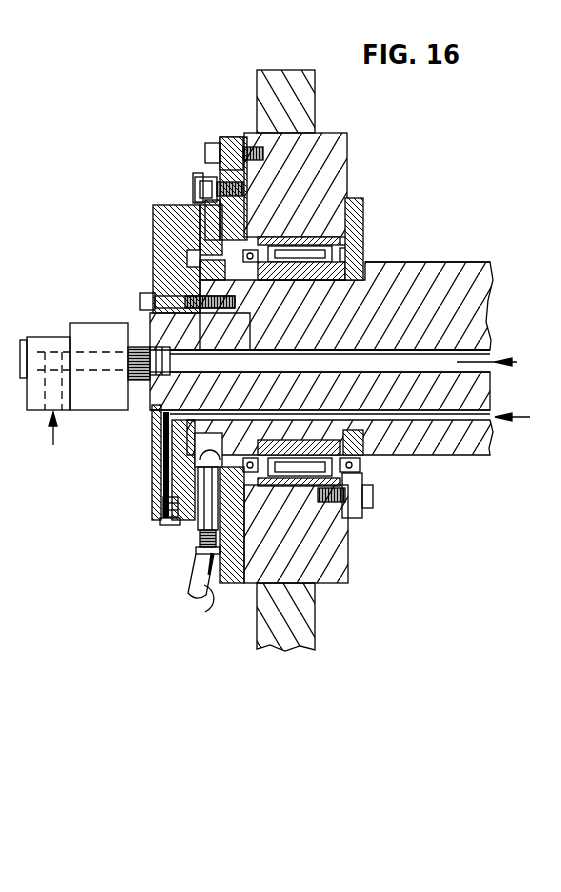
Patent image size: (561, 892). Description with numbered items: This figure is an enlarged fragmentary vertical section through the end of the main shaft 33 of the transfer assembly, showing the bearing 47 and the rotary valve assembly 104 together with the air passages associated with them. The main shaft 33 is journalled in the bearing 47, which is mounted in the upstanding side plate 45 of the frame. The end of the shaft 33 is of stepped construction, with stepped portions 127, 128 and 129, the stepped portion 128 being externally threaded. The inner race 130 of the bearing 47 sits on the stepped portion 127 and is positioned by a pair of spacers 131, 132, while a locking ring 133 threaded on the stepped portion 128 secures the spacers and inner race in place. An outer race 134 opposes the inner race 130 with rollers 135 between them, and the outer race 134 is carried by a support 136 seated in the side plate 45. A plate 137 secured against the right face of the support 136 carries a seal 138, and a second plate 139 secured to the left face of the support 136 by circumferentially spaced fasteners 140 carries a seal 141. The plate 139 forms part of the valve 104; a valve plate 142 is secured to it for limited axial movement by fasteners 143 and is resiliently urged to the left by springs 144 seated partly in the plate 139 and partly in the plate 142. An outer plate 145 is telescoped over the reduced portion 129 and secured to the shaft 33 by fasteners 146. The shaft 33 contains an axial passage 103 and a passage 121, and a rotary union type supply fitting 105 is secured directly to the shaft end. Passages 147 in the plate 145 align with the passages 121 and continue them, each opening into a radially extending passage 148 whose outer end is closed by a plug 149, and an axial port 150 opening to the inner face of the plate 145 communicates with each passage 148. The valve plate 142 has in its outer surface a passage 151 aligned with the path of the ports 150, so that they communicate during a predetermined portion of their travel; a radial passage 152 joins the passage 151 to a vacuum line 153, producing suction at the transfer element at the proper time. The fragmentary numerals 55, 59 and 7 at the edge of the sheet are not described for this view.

The main shaft 33 is at (482, 262).
The side plate 45 is at (262, 75).
The bearing 47 is at (350, 243).
The passage 103 is at (480, 352).
The rotary valve assembly 104 is at (156, 184).
The rotary union type supply fitting 105 is at (86, 330).
The passage 121 is at (492, 388).
The stepped portion 127 is at (305, 281).
The stepped portion 128 is at (228, 338).
The stepped portion 129 is at (160, 321).
The inner race 130 is at (338, 278).
The spacer 131 is at (225, 281).
The spacer 132 is at (408, 273).
The locking ring 133 is at (200, 275).
The outer race 134 is at (275, 238).
The rollers 135 is at (328, 281).
The support 136 is at (348, 142).
The plate 137 is at (368, 210).
The seal 138 is at (358, 256).
The second plate 139 is at (232, 135).
The fasteners 140 is at (212, 150).
The seal 141 is at (250, 236).
The valve plate 142 is at (198, 520).
The fasteners 143 is at (195, 185).
The springs 144 is at (168, 225).
The outer plate 145 is at (178, 205).
The fasteners 146 is at (145, 300).
The passages 147 is at (152, 425).
The radially extending passage 148 is at (152, 462).
The plug 149 is at (158, 528).
The port 150 is at (152, 498).
The passage 151 is at (197, 237).
The radial passage 152 is at (207, 550).
The vacuum line 153 is at (194, 614).
The member 55 is at (11, 307).
The member 59 is at (7, 330).
The member 7 is at (3, 409).